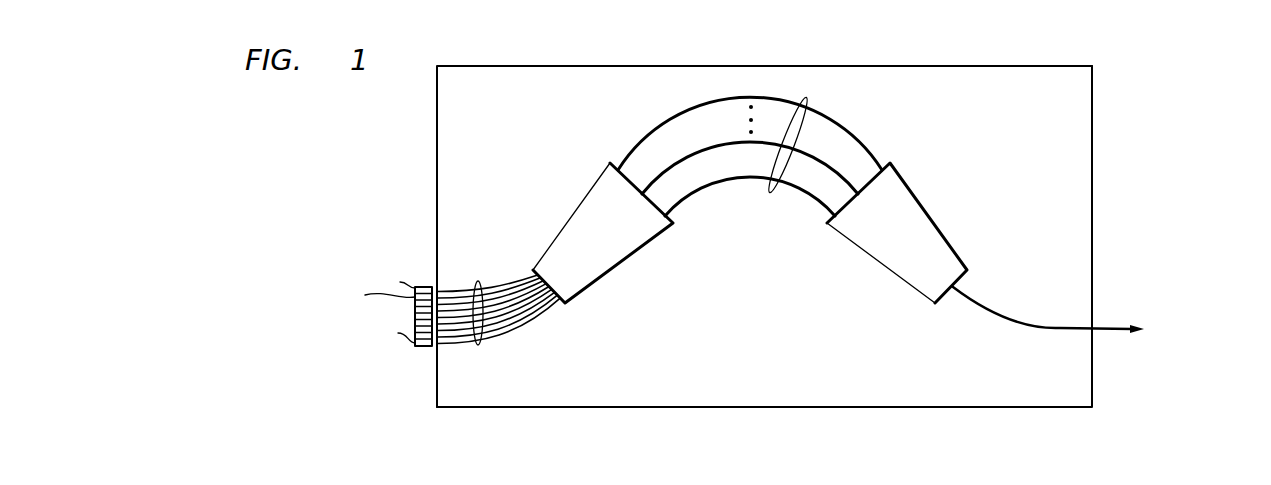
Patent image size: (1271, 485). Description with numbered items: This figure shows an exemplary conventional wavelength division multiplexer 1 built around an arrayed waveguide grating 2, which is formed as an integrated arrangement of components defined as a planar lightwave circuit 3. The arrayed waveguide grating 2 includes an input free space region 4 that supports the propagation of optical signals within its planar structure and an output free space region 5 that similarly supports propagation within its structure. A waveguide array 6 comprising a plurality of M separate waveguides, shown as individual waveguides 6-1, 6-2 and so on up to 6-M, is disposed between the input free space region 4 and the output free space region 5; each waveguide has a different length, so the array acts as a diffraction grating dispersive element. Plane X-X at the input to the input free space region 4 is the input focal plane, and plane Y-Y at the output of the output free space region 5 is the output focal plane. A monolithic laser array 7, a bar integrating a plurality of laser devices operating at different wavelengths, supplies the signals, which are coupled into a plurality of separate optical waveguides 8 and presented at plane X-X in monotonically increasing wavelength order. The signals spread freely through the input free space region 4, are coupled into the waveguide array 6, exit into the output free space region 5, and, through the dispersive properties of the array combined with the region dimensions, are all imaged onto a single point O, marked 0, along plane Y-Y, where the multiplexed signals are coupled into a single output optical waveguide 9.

The wavelength division multiplexer 1 is at (352, 112).
The arrayed waveguide grating 2 is at (902, 70).
The planar lightwave circuit 3 is at (1035, 64).
The input free space region 4 is at (583, 213).
The output free space region 5 is at (908, 193).
The waveguide array 6 is at (741, 147).
The individual waveguide 6-1 is at (707, 185).
The individual waveguide 6-2 is at (695, 153).
The individual waveguide 6-M is at (662, 123).
The monolithic laser array 7 is at (417, 280).
The optical waveguides 8 is at (483, 340).
The output optical waveguide 9 is at (1035, 325).
The point O 0 is at (953, 287).